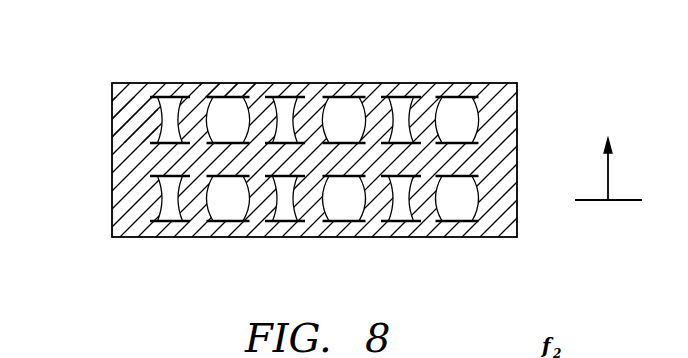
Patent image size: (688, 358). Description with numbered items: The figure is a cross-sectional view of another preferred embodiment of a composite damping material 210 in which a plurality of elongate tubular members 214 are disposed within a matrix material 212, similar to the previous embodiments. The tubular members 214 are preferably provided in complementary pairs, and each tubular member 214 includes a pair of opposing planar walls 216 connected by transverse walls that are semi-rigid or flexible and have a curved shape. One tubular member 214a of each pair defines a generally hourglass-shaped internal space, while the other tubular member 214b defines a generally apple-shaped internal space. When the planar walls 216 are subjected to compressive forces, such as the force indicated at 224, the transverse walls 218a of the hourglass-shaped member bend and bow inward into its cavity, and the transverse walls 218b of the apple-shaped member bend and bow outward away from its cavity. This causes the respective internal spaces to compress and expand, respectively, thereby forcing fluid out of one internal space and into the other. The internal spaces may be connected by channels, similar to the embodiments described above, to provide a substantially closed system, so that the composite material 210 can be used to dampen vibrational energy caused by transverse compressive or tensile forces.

The composite material 210 is at (335, 156).
The matrix material 212 is at (505, 121).
The elongate tubular members 214 is at (261, 235).
The tubular member 214a is at (165, 140).
The tubular member 214b is at (233, 109).
The planar walls 216 is at (401, 96).
The transverse walls 218a is at (153, 207).
The transverse walls 218b is at (192, 224).
The force direction indicator f2 224 is at (609, 173).